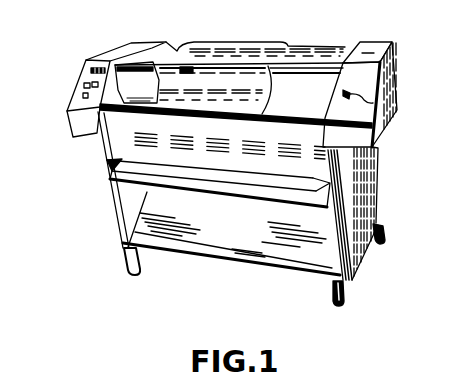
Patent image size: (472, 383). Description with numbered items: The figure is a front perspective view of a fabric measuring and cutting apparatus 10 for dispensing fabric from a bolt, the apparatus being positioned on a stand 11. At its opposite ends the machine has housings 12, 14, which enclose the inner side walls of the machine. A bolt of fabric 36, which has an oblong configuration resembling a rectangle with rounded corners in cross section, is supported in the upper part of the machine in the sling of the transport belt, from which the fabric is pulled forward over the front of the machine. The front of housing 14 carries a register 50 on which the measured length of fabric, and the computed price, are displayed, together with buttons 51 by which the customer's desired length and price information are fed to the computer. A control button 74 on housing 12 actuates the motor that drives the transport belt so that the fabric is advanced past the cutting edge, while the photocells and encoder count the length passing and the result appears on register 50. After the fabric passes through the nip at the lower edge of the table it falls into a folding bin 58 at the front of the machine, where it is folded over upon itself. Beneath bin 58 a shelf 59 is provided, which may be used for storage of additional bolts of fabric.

The fabric measuring and cutting apparatus 10 is at (405, 75).
The stand 11 is at (380, 193).
The housing 12 is at (369, 51).
The housing 14 is at (88, 62).
The bolt of fabric 36 is at (209, 53).
The register 50 is at (89, 70).
The buttons 51 is at (80, 90).
The folding bin 58 is at (220, 193).
The shelf 59 is at (189, 232).
The control button 74 is at (377, 114).